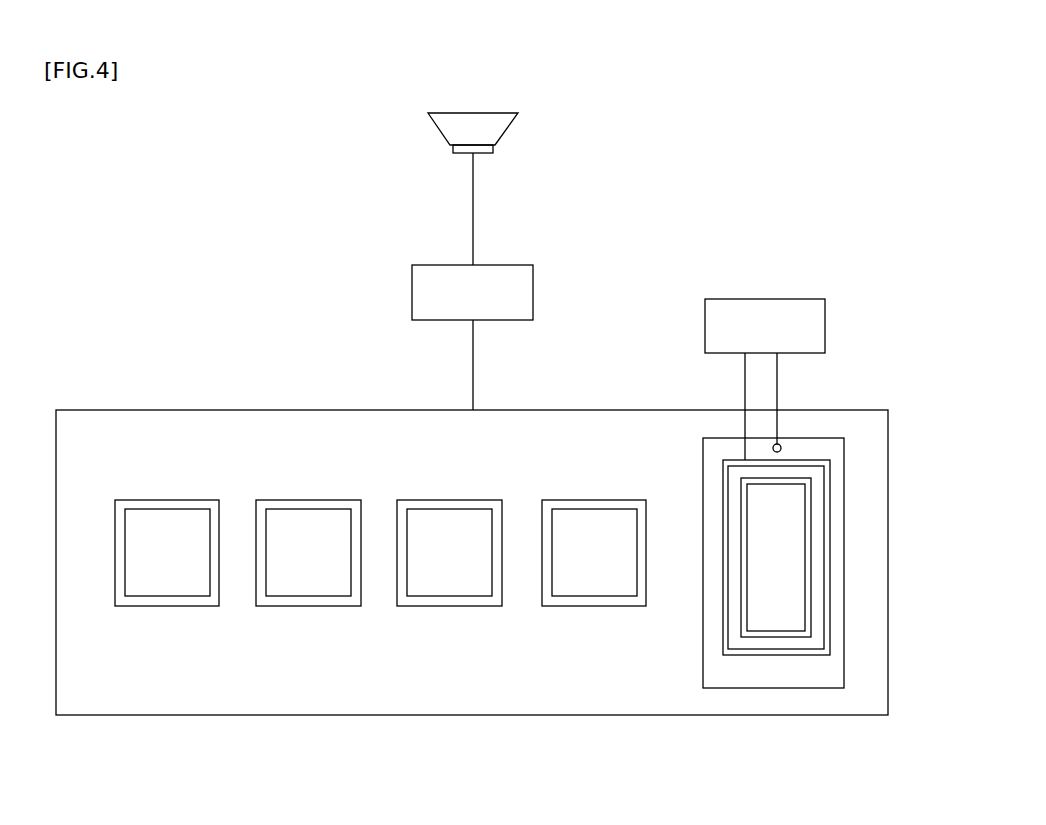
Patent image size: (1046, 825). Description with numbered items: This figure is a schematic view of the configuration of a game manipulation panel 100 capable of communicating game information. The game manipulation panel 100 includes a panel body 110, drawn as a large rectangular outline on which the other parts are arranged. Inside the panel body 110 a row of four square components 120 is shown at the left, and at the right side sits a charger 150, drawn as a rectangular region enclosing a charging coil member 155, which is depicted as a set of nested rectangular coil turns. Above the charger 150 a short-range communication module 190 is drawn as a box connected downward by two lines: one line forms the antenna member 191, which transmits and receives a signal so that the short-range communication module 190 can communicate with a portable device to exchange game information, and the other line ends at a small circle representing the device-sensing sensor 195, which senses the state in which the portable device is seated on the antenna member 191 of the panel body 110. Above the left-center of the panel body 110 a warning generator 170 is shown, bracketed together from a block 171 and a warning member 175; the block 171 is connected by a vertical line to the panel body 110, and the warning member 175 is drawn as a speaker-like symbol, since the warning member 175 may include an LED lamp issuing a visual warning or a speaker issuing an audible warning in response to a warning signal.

The game manipulation panel 100 is at (175, 213).
The panel body 110 is at (162, 410).
The electronic components 120 is at (380, 553).
The charger 150 is at (836, 438).
The charging coil member 155 is at (830, 560).
The warning generator 170 is at (378, 261).
The speaker driver unit 171 is at (433, 265).
The warning member 175 is at (443, 128).
The short-range communication module 190 is at (785, 299).
The antenna member 191 is at (740, 505).
The device-sensing sensor 195 is at (778, 444).